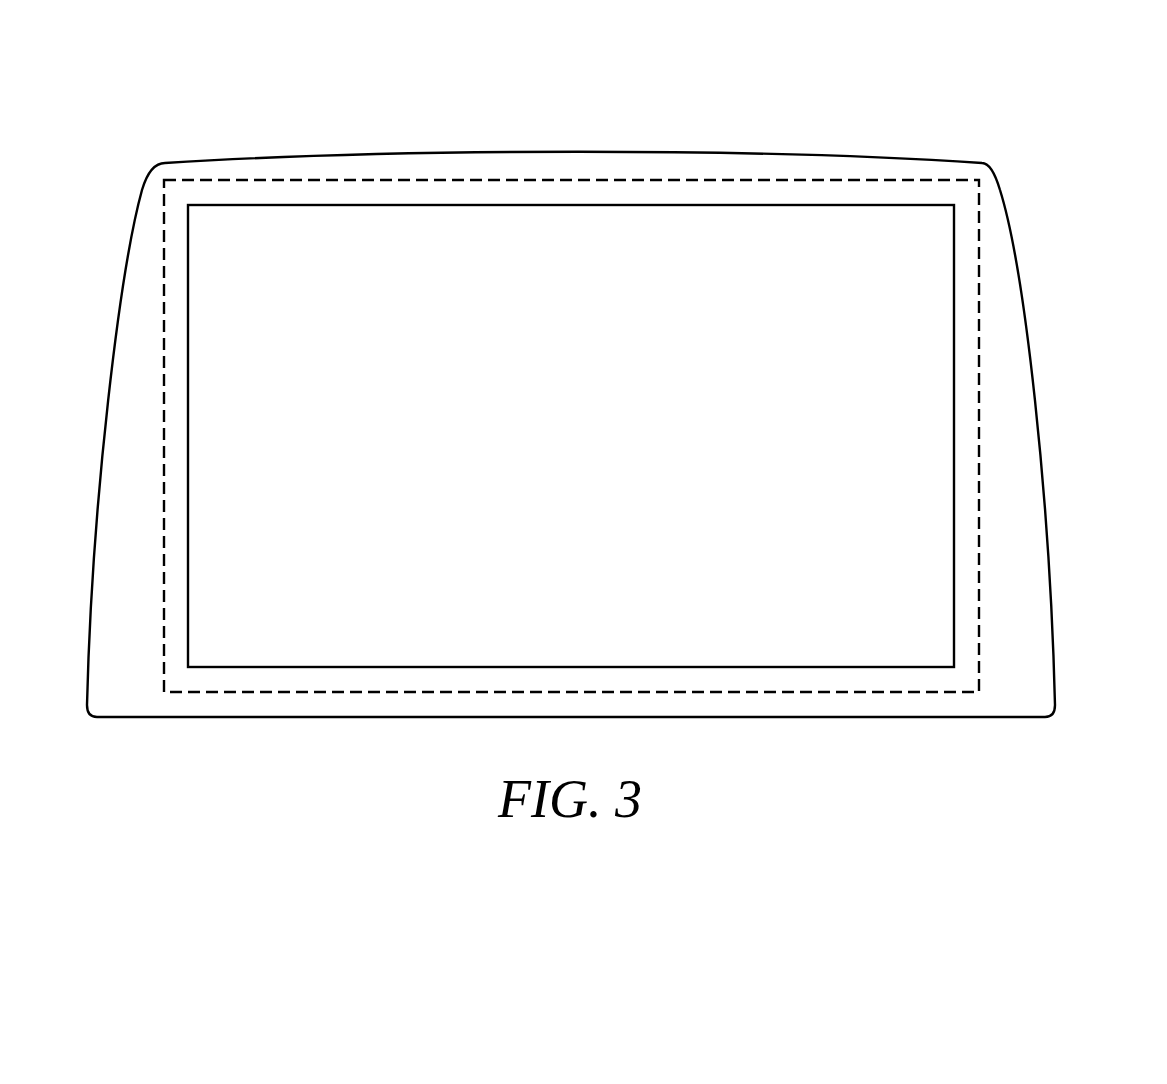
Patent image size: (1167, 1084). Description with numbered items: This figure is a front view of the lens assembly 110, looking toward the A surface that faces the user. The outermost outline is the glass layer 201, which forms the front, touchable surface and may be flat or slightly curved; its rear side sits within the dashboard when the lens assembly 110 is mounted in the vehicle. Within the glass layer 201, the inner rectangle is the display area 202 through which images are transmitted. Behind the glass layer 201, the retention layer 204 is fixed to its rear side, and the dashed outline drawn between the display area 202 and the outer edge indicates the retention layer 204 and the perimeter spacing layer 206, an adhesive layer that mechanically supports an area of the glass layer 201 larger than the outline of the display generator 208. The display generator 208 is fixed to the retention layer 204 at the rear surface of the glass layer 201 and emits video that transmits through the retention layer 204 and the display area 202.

The lens assembly 110 is at (331, 120).
The glass layer 201 is at (1072, 649).
The display area 202 is at (583, 463).
The retention layer 204 is at (983, 196).
The spacing layer 206 is at (1008, 440).
The display generator 208 is at (746, 205).